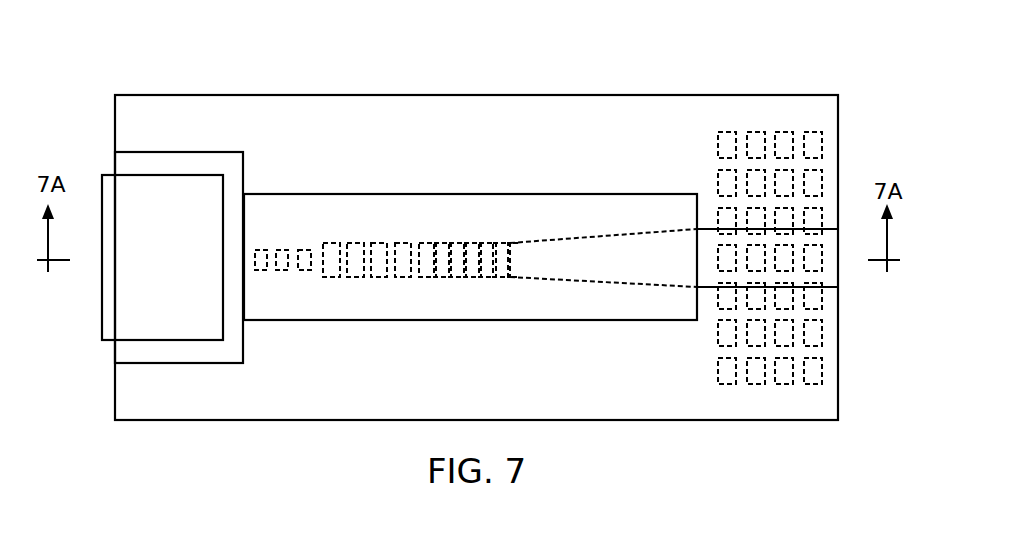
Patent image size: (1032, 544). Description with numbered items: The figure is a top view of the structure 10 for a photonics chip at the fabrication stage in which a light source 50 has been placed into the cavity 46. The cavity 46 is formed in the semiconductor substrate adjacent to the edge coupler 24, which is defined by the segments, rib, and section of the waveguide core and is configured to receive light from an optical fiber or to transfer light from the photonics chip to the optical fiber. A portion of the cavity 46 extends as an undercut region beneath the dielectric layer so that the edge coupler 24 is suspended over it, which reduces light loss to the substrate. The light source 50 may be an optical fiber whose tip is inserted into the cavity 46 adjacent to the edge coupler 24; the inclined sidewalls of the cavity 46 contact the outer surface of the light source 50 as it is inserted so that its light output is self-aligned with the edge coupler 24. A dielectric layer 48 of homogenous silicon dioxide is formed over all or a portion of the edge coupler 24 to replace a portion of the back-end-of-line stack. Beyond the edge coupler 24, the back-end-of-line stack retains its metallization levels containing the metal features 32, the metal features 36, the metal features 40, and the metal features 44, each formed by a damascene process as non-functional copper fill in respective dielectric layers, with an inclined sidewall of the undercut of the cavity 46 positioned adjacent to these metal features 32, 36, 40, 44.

The structure 10 is at (112, 56).
The edge coupler 24 is at (693, 67).
The metal features 32 is at (733, 376).
The metal features 36 is at (753, 336).
The metal features 40 is at (787, 143).
The metal features 44 is at (808, 178).
The cavity 46 is at (148, 349).
The dielectric layer 48 is at (378, 298).
The light source 50 is at (148, 306).